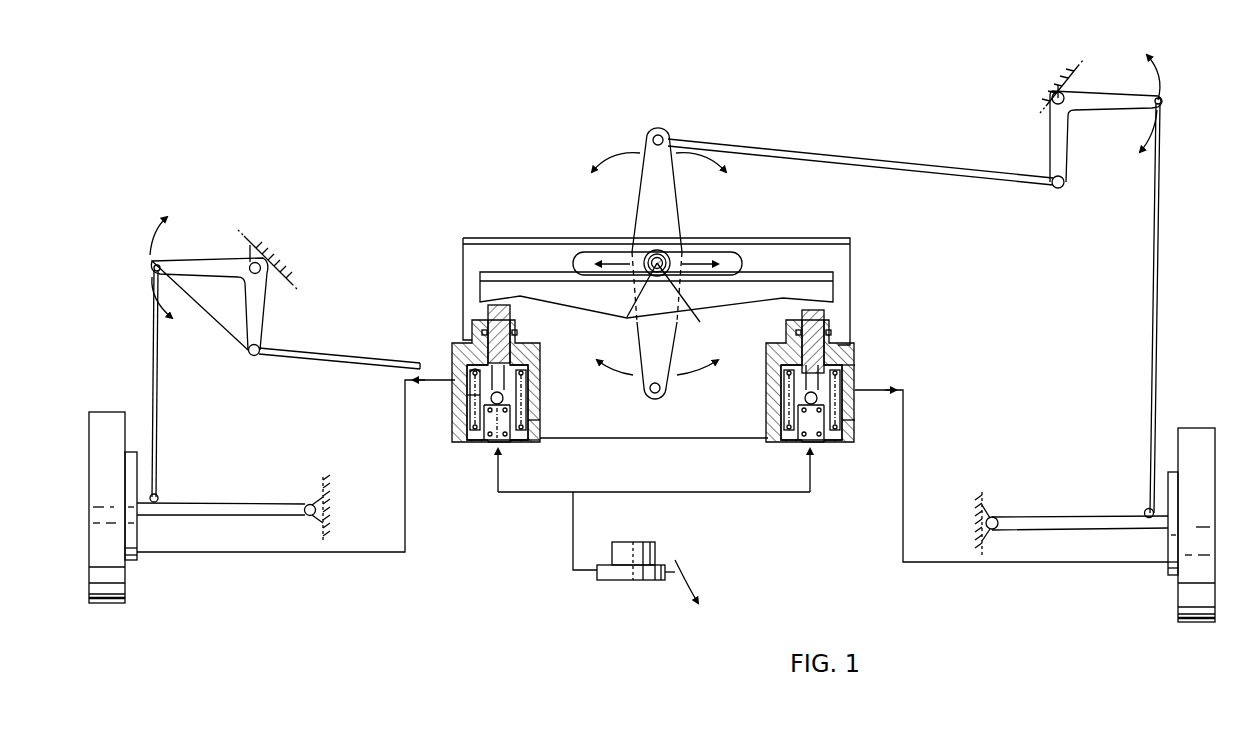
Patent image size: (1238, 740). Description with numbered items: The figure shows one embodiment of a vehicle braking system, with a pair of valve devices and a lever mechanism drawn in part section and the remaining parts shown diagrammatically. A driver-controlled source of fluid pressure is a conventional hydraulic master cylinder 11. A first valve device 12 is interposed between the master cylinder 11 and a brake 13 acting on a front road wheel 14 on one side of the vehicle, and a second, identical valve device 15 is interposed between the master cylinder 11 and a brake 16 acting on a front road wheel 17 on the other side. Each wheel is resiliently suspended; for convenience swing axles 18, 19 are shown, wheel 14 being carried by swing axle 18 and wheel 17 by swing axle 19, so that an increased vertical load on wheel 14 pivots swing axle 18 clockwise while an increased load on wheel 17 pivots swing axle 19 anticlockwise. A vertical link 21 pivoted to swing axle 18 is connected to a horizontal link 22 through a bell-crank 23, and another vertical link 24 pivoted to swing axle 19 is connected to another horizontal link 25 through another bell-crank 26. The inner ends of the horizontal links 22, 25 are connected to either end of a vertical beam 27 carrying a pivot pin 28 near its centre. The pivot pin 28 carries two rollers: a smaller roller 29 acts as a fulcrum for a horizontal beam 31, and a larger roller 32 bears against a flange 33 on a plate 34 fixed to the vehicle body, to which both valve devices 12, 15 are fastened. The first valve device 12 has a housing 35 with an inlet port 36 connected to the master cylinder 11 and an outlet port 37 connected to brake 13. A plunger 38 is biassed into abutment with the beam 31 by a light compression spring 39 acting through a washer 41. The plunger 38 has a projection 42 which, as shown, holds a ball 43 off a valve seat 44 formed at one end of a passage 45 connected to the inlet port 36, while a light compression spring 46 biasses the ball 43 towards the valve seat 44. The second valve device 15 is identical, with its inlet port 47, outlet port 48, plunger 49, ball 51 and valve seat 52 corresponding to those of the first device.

The hydraulic master cylinder 11 is at (617, 575).
The first valve device 12 is at (460, 448).
The brake 13 is at (138, 560).
The front road wheel 14 is at (110, 418).
The second valve device 15 is at (845, 450).
The brake 16 is at (1165, 575).
The front road wheel 17 is at (1193, 435).
The swing axle 18 is at (205, 505).
The swing axle 19 is at (1093, 515).
The vertical link 21 is at (160, 398).
The horizontal link 22 is at (298, 360).
The bell-crank 23 is at (200, 260).
The vertical link 24 is at (1152, 300).
The horizontal link 25 is at (850, 158).
The bell-crank 26 is at (1062, 150).
The vertical beam 27 is at (668, 215).
The pivot pin 28 is at (627, 317).
The roller 29 is at (700, 322).
The horizontal beam 31 is at (515, 283).
The roller 32 is at (688, 258).
The flange 33 is at (533, 238).
The plate 34 is at (620, 432).
The housing 35 is at (513, 443).
The inlet port 36 is at (497, 448).
The outlet port 37 is at (455, 385).
The plunger 38 is at (487, 310).
The light compression spring 39 is at (470, 425).
The washer 41 is at (470, 352).
The projection 42 is at (512, 376).
The ball 43 is at (505, 400).
The valve seat 44 is at (535, 392).
The passage 45 is at (525, 432).
The light compression spring 46 is at (490, 416).
The inlet port 47 is at (803, 450).
The outlet port 48 is at (848, 388).
The plunger 49 is at (818, 312).
The ball 51 is at (815, 412).
The valve seat 52 is at (817, 403).